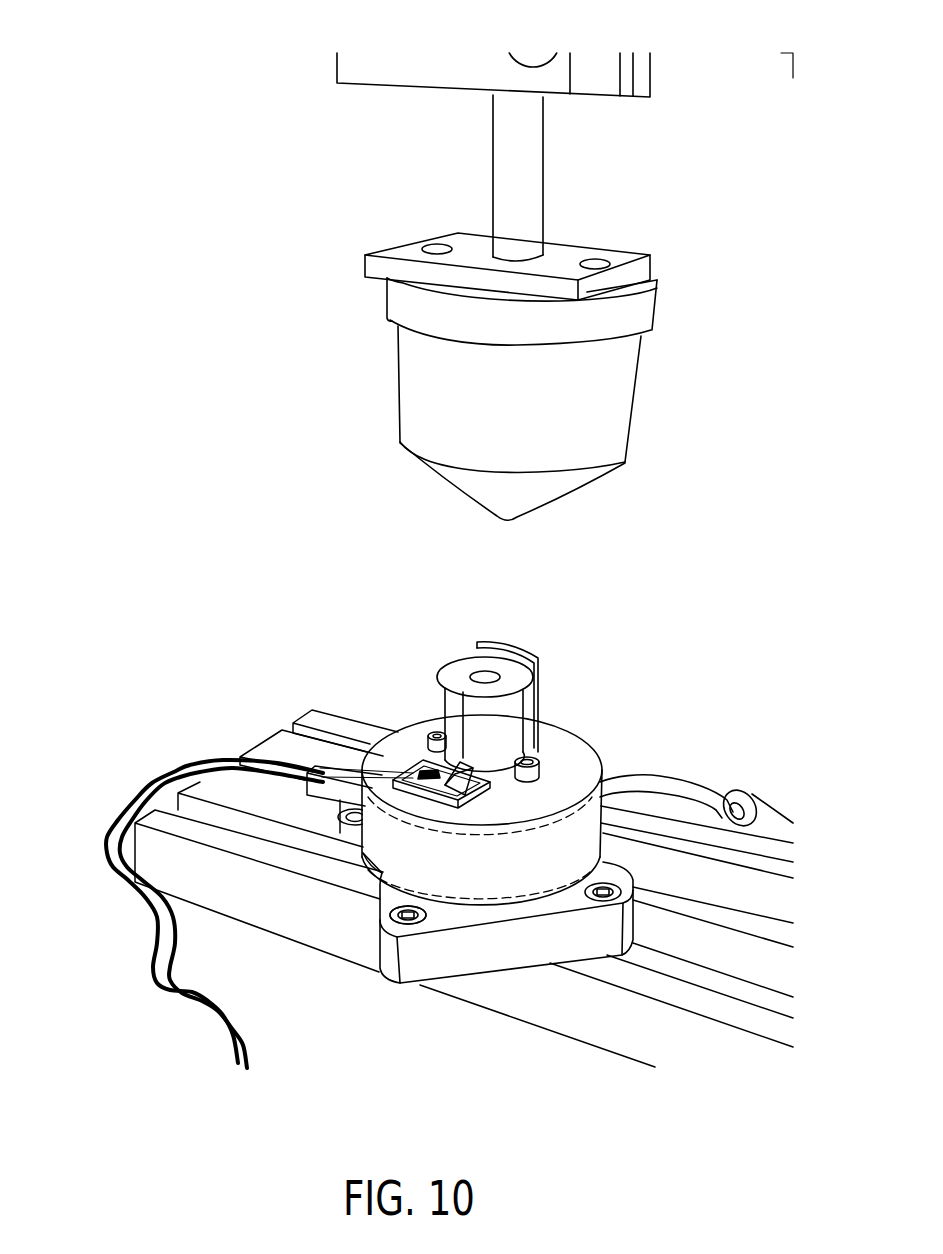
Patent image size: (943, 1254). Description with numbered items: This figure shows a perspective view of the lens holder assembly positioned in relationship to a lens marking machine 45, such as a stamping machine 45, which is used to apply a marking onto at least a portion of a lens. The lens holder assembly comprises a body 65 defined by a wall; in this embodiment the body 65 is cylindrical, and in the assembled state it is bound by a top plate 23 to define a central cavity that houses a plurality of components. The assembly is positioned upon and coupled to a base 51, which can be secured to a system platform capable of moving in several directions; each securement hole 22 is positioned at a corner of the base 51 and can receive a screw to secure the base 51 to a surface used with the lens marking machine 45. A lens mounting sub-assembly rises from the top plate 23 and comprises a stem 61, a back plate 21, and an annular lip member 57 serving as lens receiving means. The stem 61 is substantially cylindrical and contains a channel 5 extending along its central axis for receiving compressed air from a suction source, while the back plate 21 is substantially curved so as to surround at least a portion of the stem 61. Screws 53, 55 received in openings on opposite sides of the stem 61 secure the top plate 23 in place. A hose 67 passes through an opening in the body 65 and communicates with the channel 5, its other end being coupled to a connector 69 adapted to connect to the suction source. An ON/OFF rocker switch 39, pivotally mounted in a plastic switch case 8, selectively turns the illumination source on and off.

The first opening or channel 5 is at (486, 671).
The switch case 8 is at (177, 793).
The back plate 21 is at (525, 648).
The securement hole 22 is at (340, 818).
The top plate 23 is at (320, 716).
The ON/OFF rocker switch 39 is at (437, 773).
The marking machine 45 is at (633, 392).
The base 51 is at (493, 957).
The screw 53 is at (387, 748).
The screw 55 is at (533, 767).
The annular lip member 57 is at (458, 657).
The stem 61 is at (453, 707).
The body 65 is at (400, 857).
The hose 67 is at (673, 781).
The connector 69 is at (758, 821).